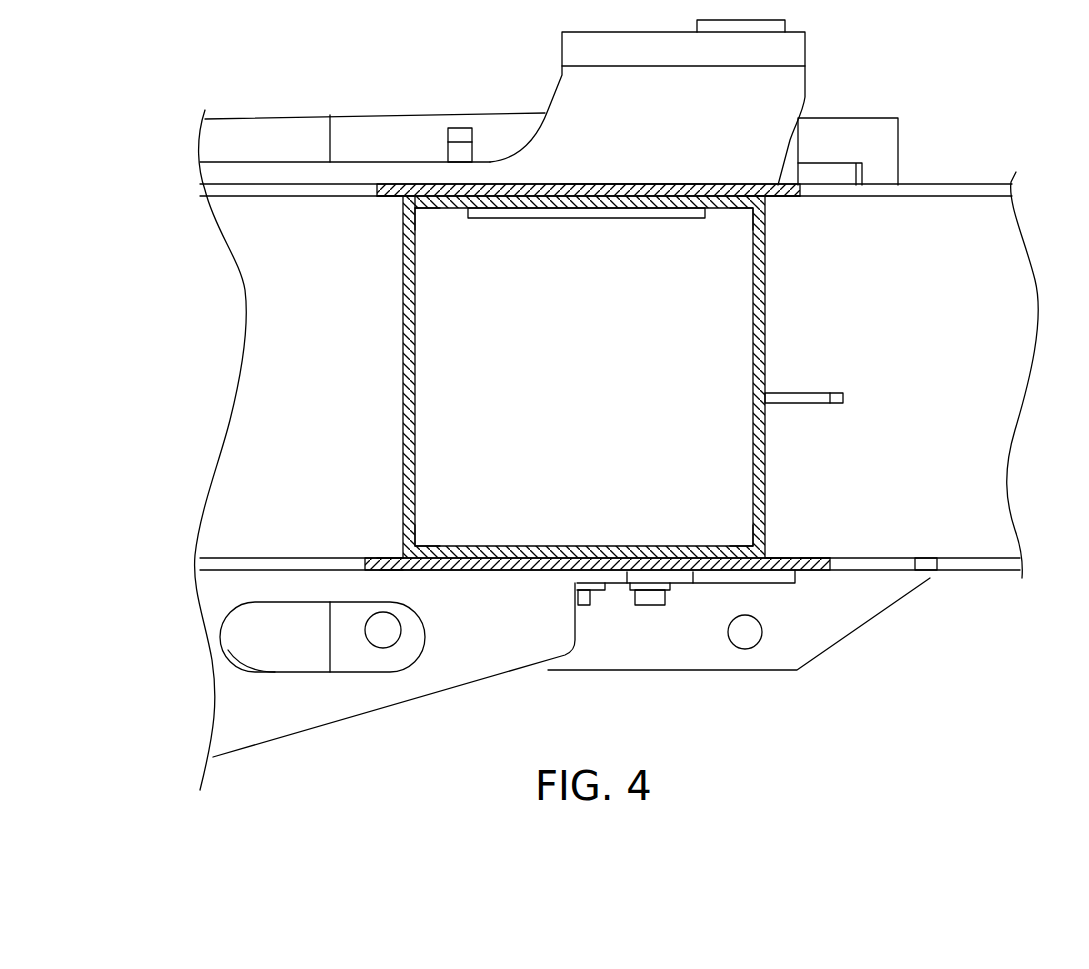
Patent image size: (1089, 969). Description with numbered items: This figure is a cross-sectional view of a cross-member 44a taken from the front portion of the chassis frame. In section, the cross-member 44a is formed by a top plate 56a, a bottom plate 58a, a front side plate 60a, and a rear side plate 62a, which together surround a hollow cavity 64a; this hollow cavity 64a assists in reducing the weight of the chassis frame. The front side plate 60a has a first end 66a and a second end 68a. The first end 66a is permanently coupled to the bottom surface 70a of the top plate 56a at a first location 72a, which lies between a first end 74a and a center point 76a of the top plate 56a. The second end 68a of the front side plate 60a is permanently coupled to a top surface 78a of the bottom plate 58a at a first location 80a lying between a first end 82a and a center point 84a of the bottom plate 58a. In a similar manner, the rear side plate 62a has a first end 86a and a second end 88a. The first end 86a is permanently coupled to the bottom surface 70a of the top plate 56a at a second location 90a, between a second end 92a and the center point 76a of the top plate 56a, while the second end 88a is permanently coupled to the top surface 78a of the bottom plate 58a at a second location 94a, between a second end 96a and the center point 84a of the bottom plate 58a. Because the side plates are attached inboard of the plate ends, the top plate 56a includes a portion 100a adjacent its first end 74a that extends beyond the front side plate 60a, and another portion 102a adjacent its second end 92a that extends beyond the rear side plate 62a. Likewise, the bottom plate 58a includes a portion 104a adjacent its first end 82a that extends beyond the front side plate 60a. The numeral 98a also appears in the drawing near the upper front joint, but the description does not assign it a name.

The cross-member 44a is at (970, 105).
The top plate 56a is at (573, 185).
The bottom plate 58a is at (480, 573).
The front side plate 60a is at (403, 385).
The rear side plate 62a is at (762, 330).
The hollow cavity 64a is at (652, 491).
The first end of the front side plate 66a is at (423, 210).
The second end of the front side plate 68a is at (418, 548).
The bottom surface of the top plate 70a is at (378, 197).
The first location of the top plate 72a is at (405, 195).
The first end of the top plate 74a is at (373, 197).
The center point of the top plate 76a is at (628, 190).
The top surface of the bottom plate 78a is at (373, 553).
The first location of the bottom plate 80a is at (387, 567).
The first end of the bottom plate 82a is at (370, 565).
The center point of the bottom plate 84a is at (608, 574).
The first end of the rear side plate 86a is at (770, 200).
The second end of the rear side plate 88a is at (750, 545).
The second location of the top plate 90a is at (750, 190).
The second end of the top plate 92a is at (808, 196).
The second location of the bottom plate 94a is at (767, 557).
The second end of the bottom plate 96a is at (803, 562).
The upper left weld 98a is at (391, 195).
The portion of the top plate 100a is at (794, 195).
The portion of the top plate 102a is at (380, 567).
The portion of the bottom plate 104a is at (785, 572).